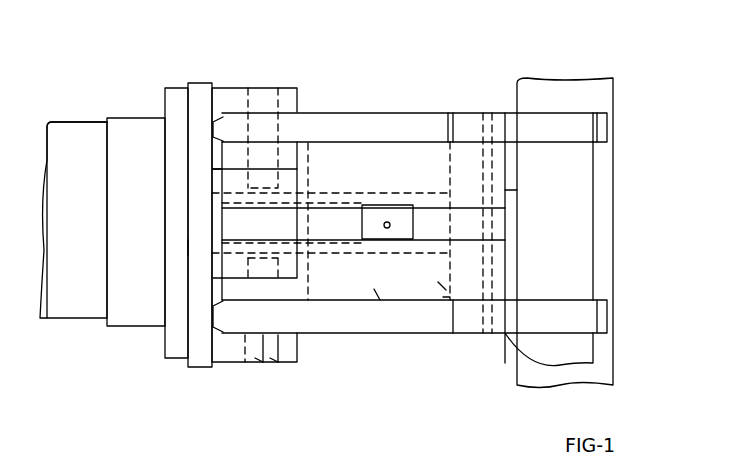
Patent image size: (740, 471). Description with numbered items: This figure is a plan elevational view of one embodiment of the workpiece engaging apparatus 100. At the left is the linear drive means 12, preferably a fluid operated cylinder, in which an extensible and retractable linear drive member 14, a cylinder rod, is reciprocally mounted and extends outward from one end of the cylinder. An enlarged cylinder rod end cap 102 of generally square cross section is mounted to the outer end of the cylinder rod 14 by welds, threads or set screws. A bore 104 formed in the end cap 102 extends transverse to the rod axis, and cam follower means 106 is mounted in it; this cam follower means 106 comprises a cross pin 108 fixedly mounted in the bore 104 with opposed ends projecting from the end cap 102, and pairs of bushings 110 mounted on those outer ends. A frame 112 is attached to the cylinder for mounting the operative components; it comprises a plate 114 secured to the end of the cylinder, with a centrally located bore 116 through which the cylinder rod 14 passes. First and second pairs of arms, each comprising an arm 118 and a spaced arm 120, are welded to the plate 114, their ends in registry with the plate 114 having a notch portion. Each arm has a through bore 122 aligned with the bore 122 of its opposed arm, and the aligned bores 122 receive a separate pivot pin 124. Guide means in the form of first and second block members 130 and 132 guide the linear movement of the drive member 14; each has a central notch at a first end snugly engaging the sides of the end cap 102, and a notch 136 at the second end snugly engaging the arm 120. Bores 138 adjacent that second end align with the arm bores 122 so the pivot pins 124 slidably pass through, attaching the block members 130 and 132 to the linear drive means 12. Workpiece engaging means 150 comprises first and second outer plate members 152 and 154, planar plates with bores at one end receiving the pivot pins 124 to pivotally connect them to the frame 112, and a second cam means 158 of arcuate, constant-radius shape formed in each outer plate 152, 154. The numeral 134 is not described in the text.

The workpiece engaging apparatus 100 is at (122, 18).
The linear drive means 12 is at (78, 140).
The linear drive member 14 is at (318, 222).
The cylinder rod end cap 102 is at (430, 200).
The bore 104 is at (485, 218).
The cam follower means 106 is at (438, 282).
The cross pin 108 is at (443, 297).
The bushings 110 is at (453, 126).
The frame 112 is at (210, 43).
The plate 114 is at (187, 370).
The bore 116 is at (198, 252).
The arm 118 is at (294, 155).
The arm 120 is at (228, 155).
The through bore 122 is at (253, 363).
The pivot pin 124 is at (260, 373).
The first block member 130 is at (373, 160).
The second block member 132 is at (374, 289).
The bore 134 is at (495, 192).
The notch 136 is at (294, 143).
The bores 138 is at (290, 143).
The workpiece engaging means 150 is at (683, 130).
The first outer plate member 152 is at (500, 112).
The second outer plate member 154 is at (580, 318).
The second cam means 158 is at (300, 270).